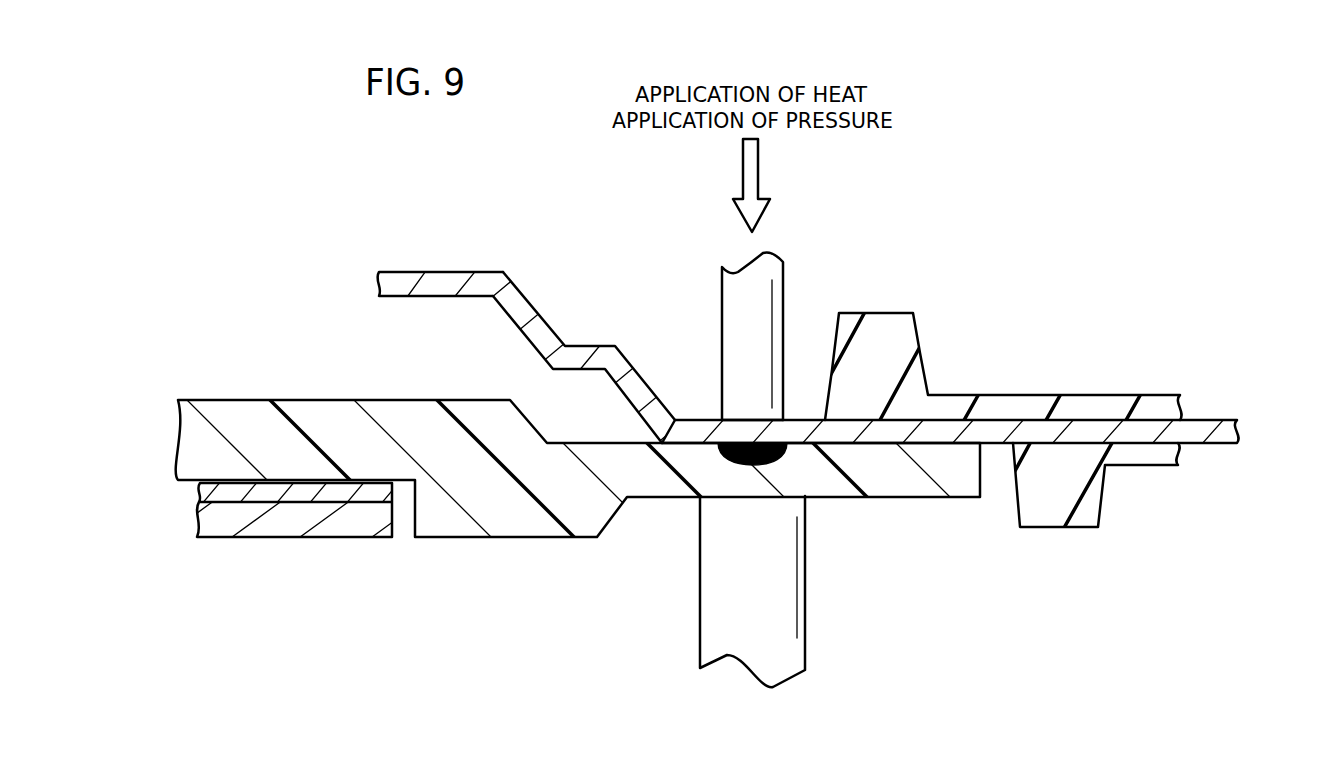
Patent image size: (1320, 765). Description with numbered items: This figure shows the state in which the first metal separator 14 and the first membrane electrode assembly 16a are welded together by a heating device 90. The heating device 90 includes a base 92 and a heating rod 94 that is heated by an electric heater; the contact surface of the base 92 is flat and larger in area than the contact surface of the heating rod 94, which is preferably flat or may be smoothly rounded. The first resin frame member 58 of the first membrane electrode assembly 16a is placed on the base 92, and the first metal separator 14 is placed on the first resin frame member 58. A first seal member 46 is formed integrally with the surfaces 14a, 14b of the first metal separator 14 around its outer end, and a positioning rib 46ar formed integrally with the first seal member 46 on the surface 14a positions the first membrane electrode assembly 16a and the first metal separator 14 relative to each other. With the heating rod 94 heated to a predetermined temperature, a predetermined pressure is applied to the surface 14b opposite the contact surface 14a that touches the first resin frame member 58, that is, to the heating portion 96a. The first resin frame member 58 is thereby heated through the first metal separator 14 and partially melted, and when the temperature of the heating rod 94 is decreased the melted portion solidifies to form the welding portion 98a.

The first metal separator 14 is at (528, 299).
The surface of the first metal separator 14a is at (437, 298).
The surface of the first metal separator 14b is at (490, 271).
The first membrane electrode assembly 16a is at (407, 556).
The first resin frame member 58 is at (536, 538).
The first seal member 46 is at (956, 446).
The positioning rib 46ar is at (1050, 517).
The heating device 90 is at (777, 422).
The heating rod 94 is at (716, 336).
The heating portion 96a is at (748, 417).
The base 92 is at (785, 565).
The welding portion 98a is at (741, 465).